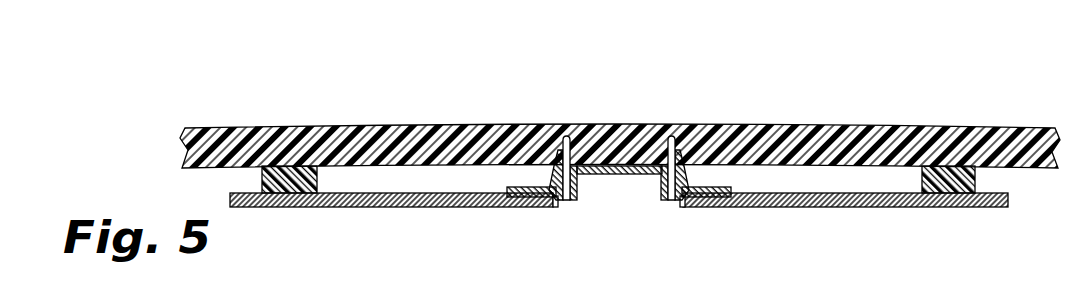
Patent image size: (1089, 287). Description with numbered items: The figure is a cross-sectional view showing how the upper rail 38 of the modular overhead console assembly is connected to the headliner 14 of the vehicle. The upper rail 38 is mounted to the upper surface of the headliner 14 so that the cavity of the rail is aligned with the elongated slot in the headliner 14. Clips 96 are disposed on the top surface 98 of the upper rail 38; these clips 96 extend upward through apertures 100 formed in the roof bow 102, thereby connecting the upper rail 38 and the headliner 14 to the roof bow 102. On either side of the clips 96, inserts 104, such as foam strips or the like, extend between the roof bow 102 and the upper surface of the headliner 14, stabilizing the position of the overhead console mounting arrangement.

The headliner 14 is at (809, 190).
The upper rail 38 is at (580, 188).
The clips 96 is at (569, 134).
The top surface 98 is at (617, 165).
The apertures 100 is at (557, 163).
The roof bow 102 is at (758, 122).
The inserts 104 is at (279, 167).